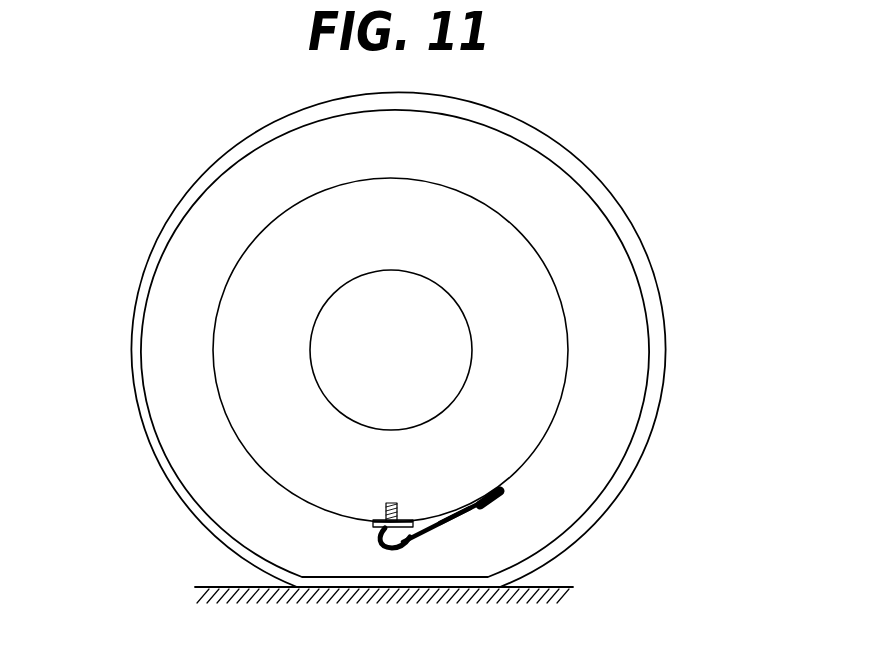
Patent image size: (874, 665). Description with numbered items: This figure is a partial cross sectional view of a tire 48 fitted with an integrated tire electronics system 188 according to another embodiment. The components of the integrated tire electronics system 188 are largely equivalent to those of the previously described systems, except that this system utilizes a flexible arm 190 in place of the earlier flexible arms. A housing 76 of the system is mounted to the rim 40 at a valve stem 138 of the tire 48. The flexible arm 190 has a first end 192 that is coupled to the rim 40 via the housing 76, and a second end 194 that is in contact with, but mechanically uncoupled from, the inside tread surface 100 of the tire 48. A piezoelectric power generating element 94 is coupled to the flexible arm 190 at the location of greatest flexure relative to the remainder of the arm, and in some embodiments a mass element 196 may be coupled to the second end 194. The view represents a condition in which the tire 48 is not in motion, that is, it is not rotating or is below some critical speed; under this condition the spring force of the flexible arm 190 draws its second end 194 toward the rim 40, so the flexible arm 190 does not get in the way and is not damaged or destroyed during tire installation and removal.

The tire 48 is at (182, 207).
The rim 40 is at (545, 262).
The valve stem 138 is at (391, 503).
The housing 76 is at (372, 521).
The first end 192 is at (411, 534).
The flexible arm 190 is at (441, 528).
The second end 194 is at (481, 505).
The mass element 196 is at (503, 491).
The integrated tire electronics system 188 is at (352, 532).
The piezoelectric power generating element 94 is at (386, 544).
The inside tread surface 100 is at (208, 516).